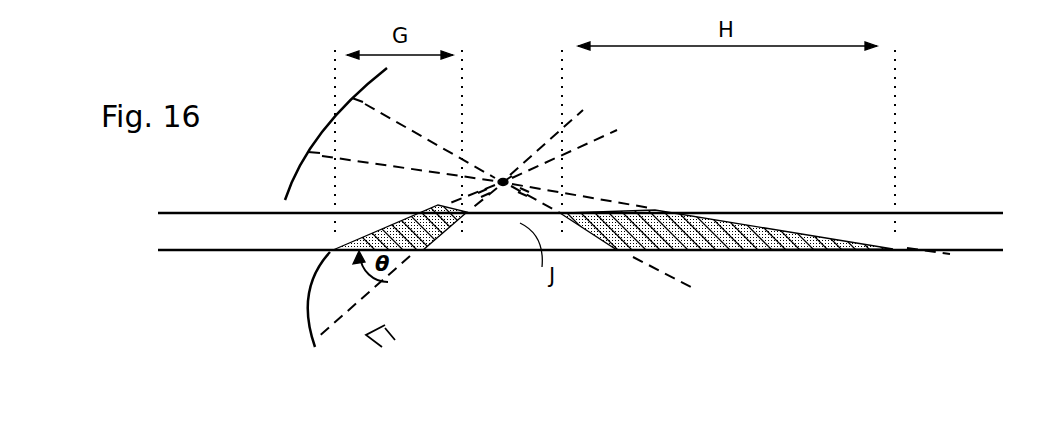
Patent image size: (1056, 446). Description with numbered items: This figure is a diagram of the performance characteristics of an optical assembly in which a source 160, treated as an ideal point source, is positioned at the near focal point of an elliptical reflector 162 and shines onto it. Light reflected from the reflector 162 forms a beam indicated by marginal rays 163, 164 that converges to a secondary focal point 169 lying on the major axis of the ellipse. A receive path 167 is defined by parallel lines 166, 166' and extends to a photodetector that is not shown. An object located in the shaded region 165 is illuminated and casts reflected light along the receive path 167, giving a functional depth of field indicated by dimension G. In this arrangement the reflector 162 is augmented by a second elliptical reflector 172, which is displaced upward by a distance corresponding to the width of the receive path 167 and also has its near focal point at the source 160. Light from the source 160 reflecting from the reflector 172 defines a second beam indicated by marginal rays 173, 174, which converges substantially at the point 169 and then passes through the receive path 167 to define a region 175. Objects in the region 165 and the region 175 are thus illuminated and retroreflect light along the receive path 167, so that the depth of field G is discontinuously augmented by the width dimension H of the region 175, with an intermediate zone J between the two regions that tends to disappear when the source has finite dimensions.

The source 160 is at (390, 327).
The elliptical reflector 162 is at (298, 318).
The marginal ray 163 is at (421, 258).
The marginal ray 164 is at (437, 204).
The shaded region 165 is at (430, 232).
The parallel line 166 is at (599, 188).
The parallel line 166' is at (598, 276).
The receive path 167 is at (278, 232).
The secondary focal point 169 is at (502, 172).
The second elliptical reflector 172 is at (312, 134).
The marginal ray 173 is at (630, 254).
The marginal ray 174 is at (642, 208).
The region 175 is at (730, 246).